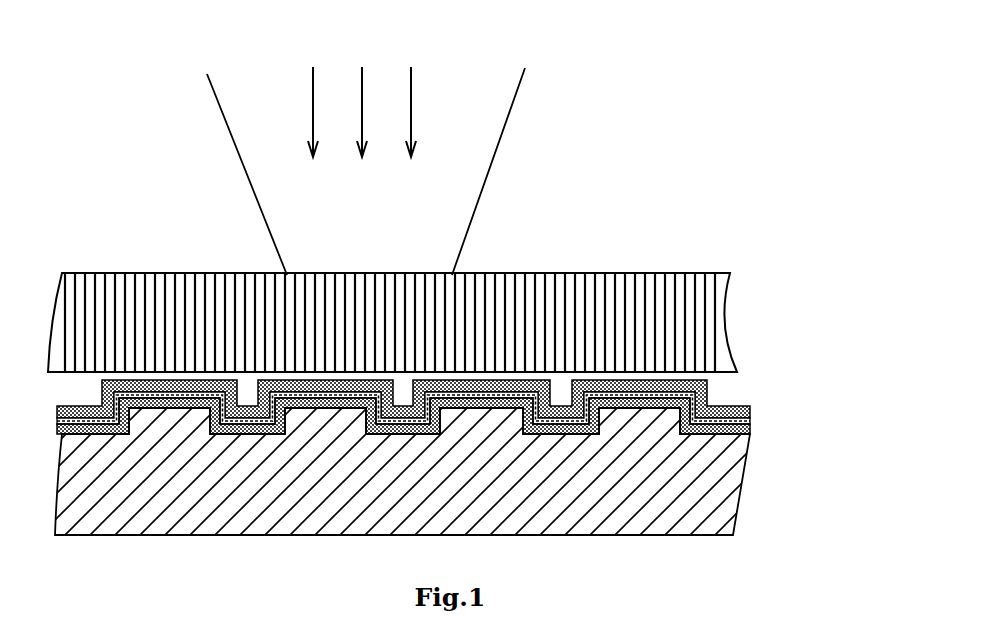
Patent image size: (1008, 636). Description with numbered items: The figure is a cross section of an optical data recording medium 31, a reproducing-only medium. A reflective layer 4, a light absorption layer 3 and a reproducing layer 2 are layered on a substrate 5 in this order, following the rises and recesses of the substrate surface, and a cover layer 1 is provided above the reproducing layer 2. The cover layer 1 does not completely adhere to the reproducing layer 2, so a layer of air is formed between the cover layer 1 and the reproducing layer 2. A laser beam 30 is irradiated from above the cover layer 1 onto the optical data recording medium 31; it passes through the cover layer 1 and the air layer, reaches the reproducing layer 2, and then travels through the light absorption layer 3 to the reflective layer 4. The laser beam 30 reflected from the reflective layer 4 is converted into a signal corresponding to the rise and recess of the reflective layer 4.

The cover layer 1 is at (722, 322).
The reproducing layer 2 is at (745, 405).
The light absorption layer 3 is at (753, 418).
The reflective layer 4 is at (753, 428).
The substrate 5 is at (735, 478).
The laser beam 30 is at (411, 112).
The optical data recording medium 31 is at (732, 235).